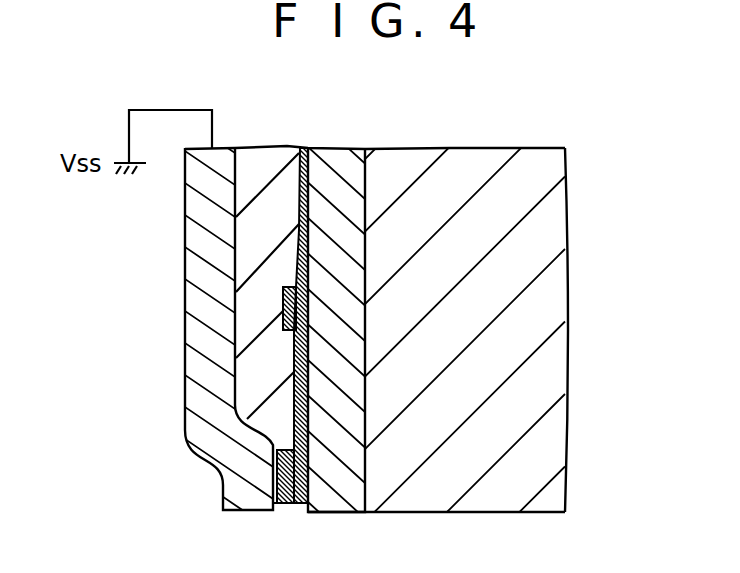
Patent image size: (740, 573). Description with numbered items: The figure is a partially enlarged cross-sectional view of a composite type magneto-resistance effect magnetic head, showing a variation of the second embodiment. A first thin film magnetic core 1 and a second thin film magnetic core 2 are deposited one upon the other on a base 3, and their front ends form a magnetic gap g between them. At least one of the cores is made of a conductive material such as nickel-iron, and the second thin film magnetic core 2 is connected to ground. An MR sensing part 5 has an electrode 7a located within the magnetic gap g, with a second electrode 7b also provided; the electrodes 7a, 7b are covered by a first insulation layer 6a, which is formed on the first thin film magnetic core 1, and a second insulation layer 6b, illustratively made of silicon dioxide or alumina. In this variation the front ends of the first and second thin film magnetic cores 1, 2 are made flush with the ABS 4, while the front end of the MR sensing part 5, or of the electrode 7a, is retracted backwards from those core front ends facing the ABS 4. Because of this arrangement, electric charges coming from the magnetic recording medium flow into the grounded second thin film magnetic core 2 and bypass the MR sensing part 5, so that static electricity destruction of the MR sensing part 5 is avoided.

The first thin film magnetic core 1 is at (334, 163).
The second thin film magnetic core 2 is at (228, 162).
The base 3 is at (540, 304).
The ABS 4 is at (452, 513).
The MR sensing part 5 is at (292, 366).
The first insulation layer 6a is at (299, 216).
The second insulation layer 6b is at (263, 263).
The electrode 7a is at (277, 478).
The electrode 7b is at (283, 326).
The magnetic gap g is at (282, 505).